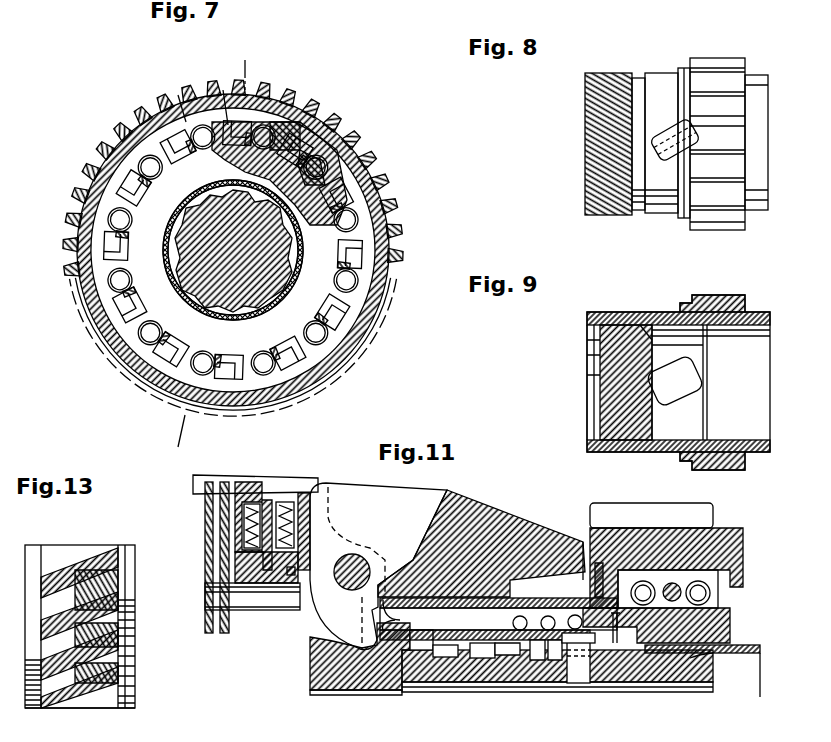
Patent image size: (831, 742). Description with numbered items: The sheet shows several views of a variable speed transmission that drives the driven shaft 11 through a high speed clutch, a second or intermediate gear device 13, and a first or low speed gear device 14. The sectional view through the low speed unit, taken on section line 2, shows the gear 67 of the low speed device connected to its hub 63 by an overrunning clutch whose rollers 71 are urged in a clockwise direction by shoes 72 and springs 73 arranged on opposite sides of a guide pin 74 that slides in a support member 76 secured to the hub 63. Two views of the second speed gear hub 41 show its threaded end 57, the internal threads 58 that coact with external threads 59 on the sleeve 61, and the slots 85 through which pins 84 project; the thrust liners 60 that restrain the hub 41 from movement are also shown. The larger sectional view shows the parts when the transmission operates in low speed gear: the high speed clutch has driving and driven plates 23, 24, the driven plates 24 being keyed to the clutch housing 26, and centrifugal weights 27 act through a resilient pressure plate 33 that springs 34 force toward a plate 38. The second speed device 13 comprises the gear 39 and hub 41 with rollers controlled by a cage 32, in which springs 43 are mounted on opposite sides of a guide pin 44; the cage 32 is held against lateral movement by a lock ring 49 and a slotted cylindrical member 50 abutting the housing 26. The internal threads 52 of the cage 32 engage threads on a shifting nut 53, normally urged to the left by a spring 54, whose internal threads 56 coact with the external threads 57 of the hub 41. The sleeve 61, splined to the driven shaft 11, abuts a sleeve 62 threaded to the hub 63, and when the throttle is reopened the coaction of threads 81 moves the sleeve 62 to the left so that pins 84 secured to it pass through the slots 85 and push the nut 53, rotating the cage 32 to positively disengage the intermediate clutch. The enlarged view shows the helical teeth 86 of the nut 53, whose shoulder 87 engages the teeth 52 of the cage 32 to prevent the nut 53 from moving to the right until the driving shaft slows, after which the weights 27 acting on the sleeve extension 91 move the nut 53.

In FIG. 7, the section line 2 is at (257, 66).
In FIG. 7, the driven shaft 11 is at (255, 300).
In FIG. 11, the second or intermediate gear device 13 is at (712, 548).
In FIG. 7, the first or low speed gear device 14 is at (126, 107).
In FIG. 11, the driving plates 23 is at (207, 590).
In FIG. 11, the driven plates 24 is at (220, 625).
In FIG. 11, the clutch housing 26 is at (330, 520).
In FIG. 11, the centrifugal weights 27 is at (398, 517).
In FIG. 11, the cage 32 is at (610, 575).
In FIG. 11, the resilient pressure plate 33 is at (302, 494).
In FIG. 11, the springs 34 is at (270, 500).
In FIG. 11, the plate 38 is at (252, 484).
In FIG. 11, the gear 39 is at (713, 512).
In FIG. 8, the hub 41 is at (766, 55).
In FIG. 9, the hub 41 is at (722, 300).
In FIG. 11, the hub 41 is at (705, 623).
In FIG. 11, the springs 43 is at (712, 595).
In FIG. 11, the guide pin 44 is at (668, 589).
In FIG. 11, the lock ring 49 is at (596, 535).
In FIG. 11, the slotted cylindrical member 50 is at (393, 612).
In FIG. 11, the internal threads 52 is at (421, 640).
In FIG. 13, the internal threads 52 is at (118, 572).
In FIG. 11, the shifting nut 53 is at (458, 660).
In FIG. 13, the shifting nut 53 is at (148, 723).
In FIG. 11, the spring 54 is at (498, 619).
In FIG. 11, the internal threads 56 is at (508, 660).
In FIG. 8, the external threads 57 is at (620, 76).
In FIG. 9, the external threads 57 is at (618, 316).
In FIG. 11, the external threads 57 is at (538, 662).
In FIG. 9, the internal threads 58 is at (652, 342).
In FIG. 11, the internal threads 58 is at (556, 662).
In FIG. 11, the external threads 59 is at (488, 660).
In FIG. 7, the thrust liners 60 is at (292, 236).
In FIG. 8, the thrust liners 60 is at (760, 78).
In FIG. 9, the thrust liners 60 is at (765, 316).
In FIG. 11, the thrust liners 60 is at (760, 648).
In FIG. 11, the sleeve 61 is at (432, 678).
In FIG. 11, the sleeve 62 is at (665, 672).
In FIG. 7, the hub 63 is at (85, 228).
In FIG. 7, the gear 67 is at (112, 142).
In FIG. 7, the rollers 71 is at (300, 113).
In FIG. 7, the shoes 72 is at (330, 145).
In FIG. 7, the springs 73 is at (320, 135).
In FIG. 7, the guide pin 74 is at (196, 128).
In FIG. 7, the support member 76 is at (226, 122).
In FIG. 11, the threads 81 is at (700, 660).
In FIG. 11, the pins 84 is at (578, 670).
In FIG. 8, the slots 85 is at (674, 140).
In FIG. 9, the slots 85 is at (675, 381).
In FIG. 11, the slots 85 is at (615, 645).
In FIG. 11, the helical teeth 86 is at (385, 612).
In FIG. 13, the helical teeth 86 is at (60, 573).
In FIG. 13, the shoulder 87 is at (80, 565).
In FIG. 11, the sleeve extension 91 is at (378, 612).
In FIG. 13, the sleeve extension 91 is at (33, 700).